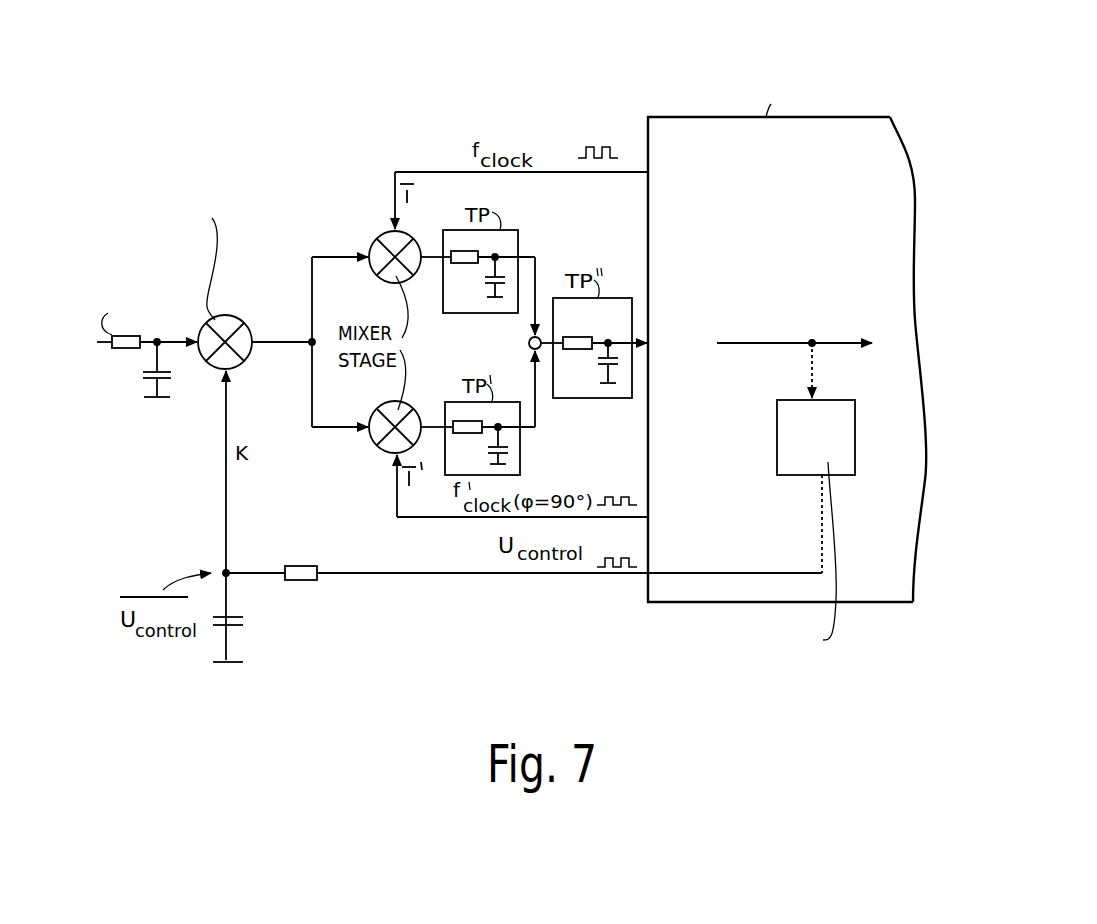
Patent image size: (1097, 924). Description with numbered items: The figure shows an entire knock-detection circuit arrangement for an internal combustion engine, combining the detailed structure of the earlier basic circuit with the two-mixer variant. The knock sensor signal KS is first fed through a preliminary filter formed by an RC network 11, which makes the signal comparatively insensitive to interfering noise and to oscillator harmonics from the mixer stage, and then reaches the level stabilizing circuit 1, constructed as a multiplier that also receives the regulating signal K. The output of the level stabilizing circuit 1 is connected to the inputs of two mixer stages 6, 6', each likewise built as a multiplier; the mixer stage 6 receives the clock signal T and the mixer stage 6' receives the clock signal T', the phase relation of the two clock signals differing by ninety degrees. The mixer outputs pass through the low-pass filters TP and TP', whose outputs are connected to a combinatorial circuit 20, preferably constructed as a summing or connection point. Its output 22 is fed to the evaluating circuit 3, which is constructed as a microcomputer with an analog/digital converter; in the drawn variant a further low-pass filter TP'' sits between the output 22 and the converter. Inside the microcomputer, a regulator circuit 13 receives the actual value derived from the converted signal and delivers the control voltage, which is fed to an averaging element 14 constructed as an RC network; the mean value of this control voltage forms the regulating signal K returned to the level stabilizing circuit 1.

The level stabilizing circuit 1 is at (223, 306).
The evaluating circuit 3 is at (851, 141).
The mixer stage 6 is at (376, 210).
The mixer stage 6' is at (367, 473).
The RC network 11 is at (127, 380).
The regulator circuit 13 is at (790, 426).
The averaging element 14 is at (256, 590).
The combinatorial circuit 20 is at (529, 343).
The output 22 is at (539, 353).